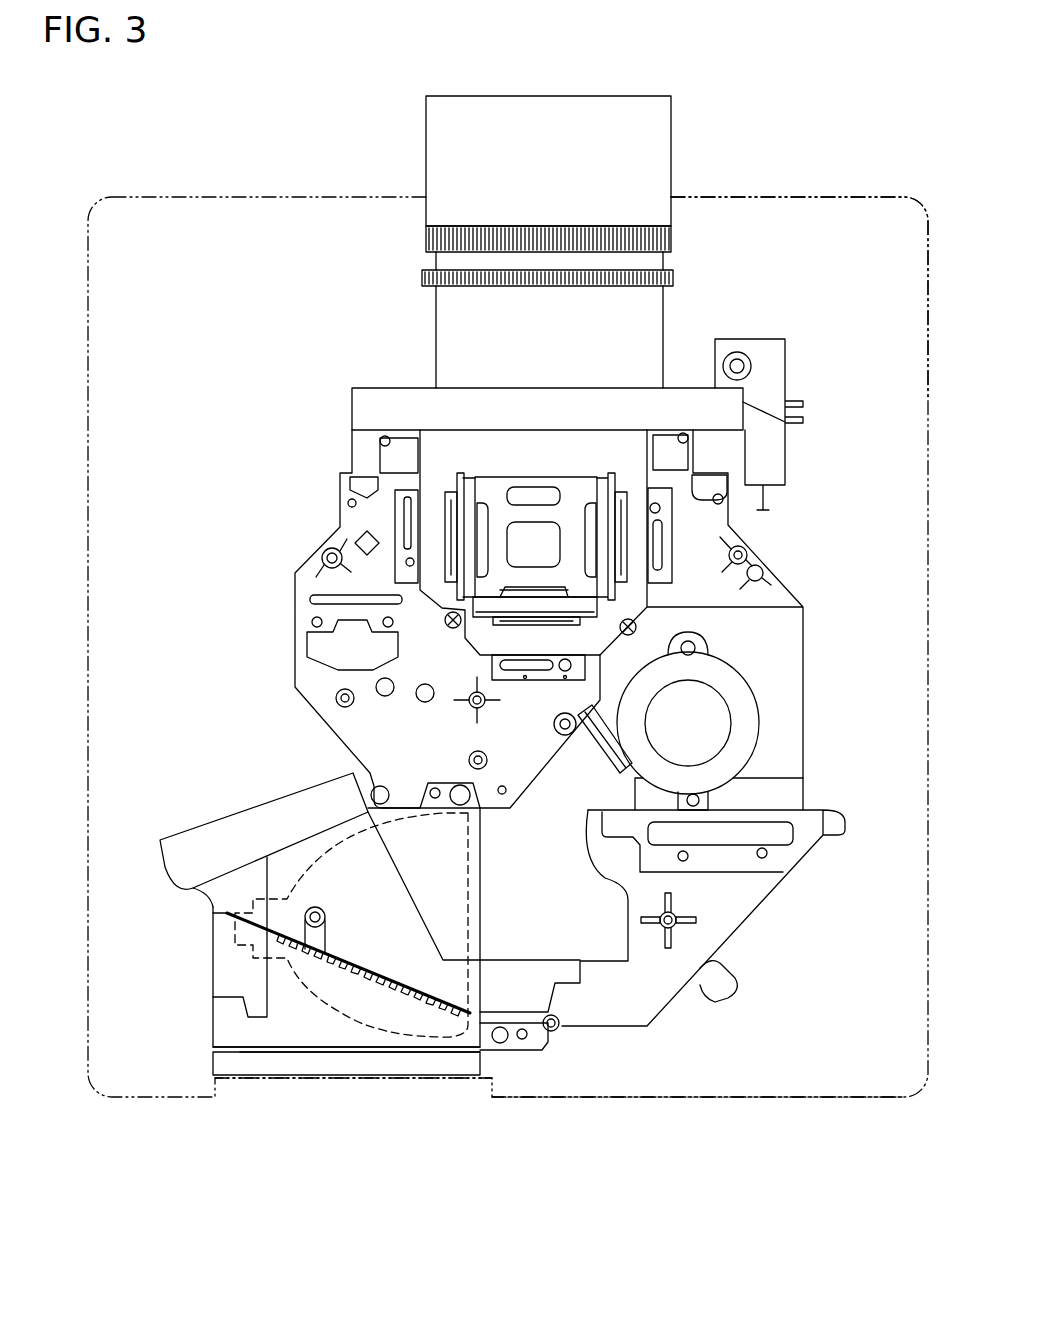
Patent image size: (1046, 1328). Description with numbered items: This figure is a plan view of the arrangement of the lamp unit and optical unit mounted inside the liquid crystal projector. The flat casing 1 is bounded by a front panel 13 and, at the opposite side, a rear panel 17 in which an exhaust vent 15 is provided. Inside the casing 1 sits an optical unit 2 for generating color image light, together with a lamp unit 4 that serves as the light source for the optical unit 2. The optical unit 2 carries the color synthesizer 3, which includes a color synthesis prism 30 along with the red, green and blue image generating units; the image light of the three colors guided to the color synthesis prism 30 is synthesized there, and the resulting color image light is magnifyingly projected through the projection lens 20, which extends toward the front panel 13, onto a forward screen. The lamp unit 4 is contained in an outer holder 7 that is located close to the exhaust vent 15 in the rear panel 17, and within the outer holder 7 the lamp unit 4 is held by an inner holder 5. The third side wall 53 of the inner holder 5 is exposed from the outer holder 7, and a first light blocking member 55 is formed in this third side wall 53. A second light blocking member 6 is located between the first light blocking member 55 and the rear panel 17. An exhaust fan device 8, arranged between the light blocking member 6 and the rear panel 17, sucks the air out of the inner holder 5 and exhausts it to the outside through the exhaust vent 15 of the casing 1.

The casing 1 is at (140, 197).
The front panel 13 is at (782, 197).
The rear panel 17 is at (607, 1097).
The exhaust vent 15 is at (343, 1105).
The projection lens 20 is at (608, 96).
The optical unit 2 is at (768, 647).
The color synthesizer 3 is at (490, 475).
The color synthesis prism 30 is at (539, 548).
The outer holder 7 is at (243, 893).
The second light blocking member 6 is at (383, 1048).
The lamp unit 4 is at (392, 952).
The first light blocking member 55 is at (435, 1048).
The inner holder 5 is at (458, 1058).
The exhaust fan device 8 is at (302, 1075).
The third side wall 53 is at (243, 1052).